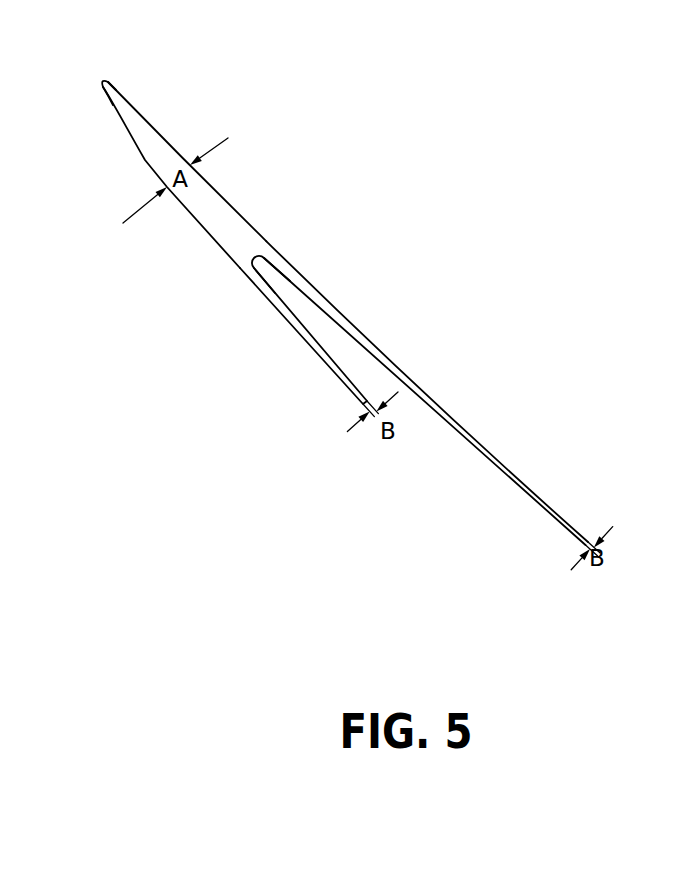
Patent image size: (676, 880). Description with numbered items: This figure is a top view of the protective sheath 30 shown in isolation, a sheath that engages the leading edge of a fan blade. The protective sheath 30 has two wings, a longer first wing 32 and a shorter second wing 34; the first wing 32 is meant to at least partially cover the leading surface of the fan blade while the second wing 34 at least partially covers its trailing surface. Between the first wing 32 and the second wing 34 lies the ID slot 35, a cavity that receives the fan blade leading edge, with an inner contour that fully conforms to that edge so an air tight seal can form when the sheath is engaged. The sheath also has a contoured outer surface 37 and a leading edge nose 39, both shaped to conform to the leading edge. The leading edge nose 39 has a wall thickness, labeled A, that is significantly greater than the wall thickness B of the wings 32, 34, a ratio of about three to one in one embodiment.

The protective sheath 30 is at (351, 307).
The first wing 32 is at (463, 429).
The second wing 34 is at (292, 326).
The ID slot 35 is at (313, 323).
The contoured outer surface 37 is at (127, 101).
The leading edge nose 39 is at (155, 148).